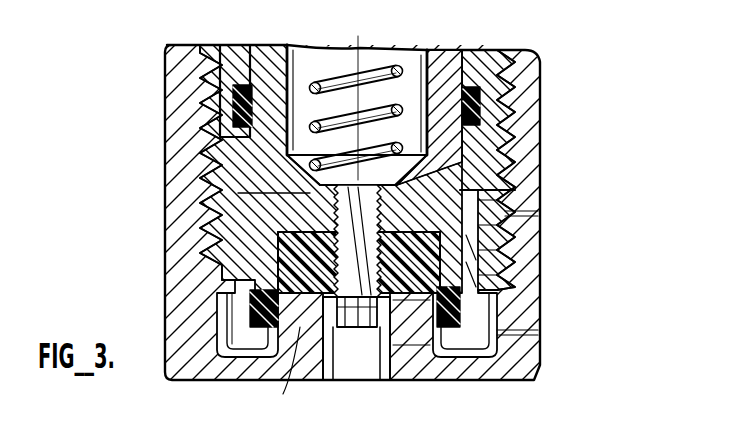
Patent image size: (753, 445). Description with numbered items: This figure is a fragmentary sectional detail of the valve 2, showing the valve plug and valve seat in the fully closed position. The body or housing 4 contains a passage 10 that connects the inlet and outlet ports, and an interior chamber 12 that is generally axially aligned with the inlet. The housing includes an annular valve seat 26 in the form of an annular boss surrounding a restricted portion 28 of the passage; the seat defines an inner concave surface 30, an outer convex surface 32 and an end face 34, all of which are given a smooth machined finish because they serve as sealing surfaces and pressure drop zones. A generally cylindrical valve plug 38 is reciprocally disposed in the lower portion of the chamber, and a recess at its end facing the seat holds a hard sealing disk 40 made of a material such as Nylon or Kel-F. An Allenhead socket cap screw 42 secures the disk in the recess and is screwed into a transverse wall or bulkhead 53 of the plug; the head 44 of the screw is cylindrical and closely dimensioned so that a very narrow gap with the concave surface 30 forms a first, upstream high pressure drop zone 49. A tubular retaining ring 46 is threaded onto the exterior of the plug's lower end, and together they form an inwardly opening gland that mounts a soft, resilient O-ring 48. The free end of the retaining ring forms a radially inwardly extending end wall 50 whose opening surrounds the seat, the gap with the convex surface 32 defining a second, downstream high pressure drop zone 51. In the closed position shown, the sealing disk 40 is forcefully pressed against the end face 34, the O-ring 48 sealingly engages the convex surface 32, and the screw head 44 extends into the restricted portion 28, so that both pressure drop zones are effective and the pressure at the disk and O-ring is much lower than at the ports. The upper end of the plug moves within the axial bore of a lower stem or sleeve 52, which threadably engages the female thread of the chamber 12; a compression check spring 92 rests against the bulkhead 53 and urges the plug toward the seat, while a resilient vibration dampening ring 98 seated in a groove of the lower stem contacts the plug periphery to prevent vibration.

The valve 2 is at (575, 165).
The body or housing 4 is at (170, 305).
The passage 10 is at (533, 240).
The interior chamber 12 is at (230, 158).
The annular valve seat 26 is at (282, 368).
The restricted portion of the passage 28 is at (353, 372).
The inner concave surface 30 is at (323, 381).
The outer convex surface 32 is at (265, 347).
The end face 34 is at (173, 265).
The valve plug 38 is at (518, 52).
The hard sealing disk 40 is at (495, 266).
The Allenhead socket cap screw 42 is at (533, 147).
The head of the screw 44 is at (385, 320).
The tubular retaining ring 46 is at (535, 200).
The O-ring 48 is at (530, 291).
The first upstream high pressure drop zone 49 is at (421, 328).
The end wall 50 is at (446, 350).
The second downstream high pressure drop zone 51 is at (168, 348).
The lower stem or sleeve 52 is at (233, 73).
The transverse wall or bulkhead 53 is at (238, 193).
The compression check spring 92 is at (403, 70).
The vibration dampening ring 98 is at (532, 102).